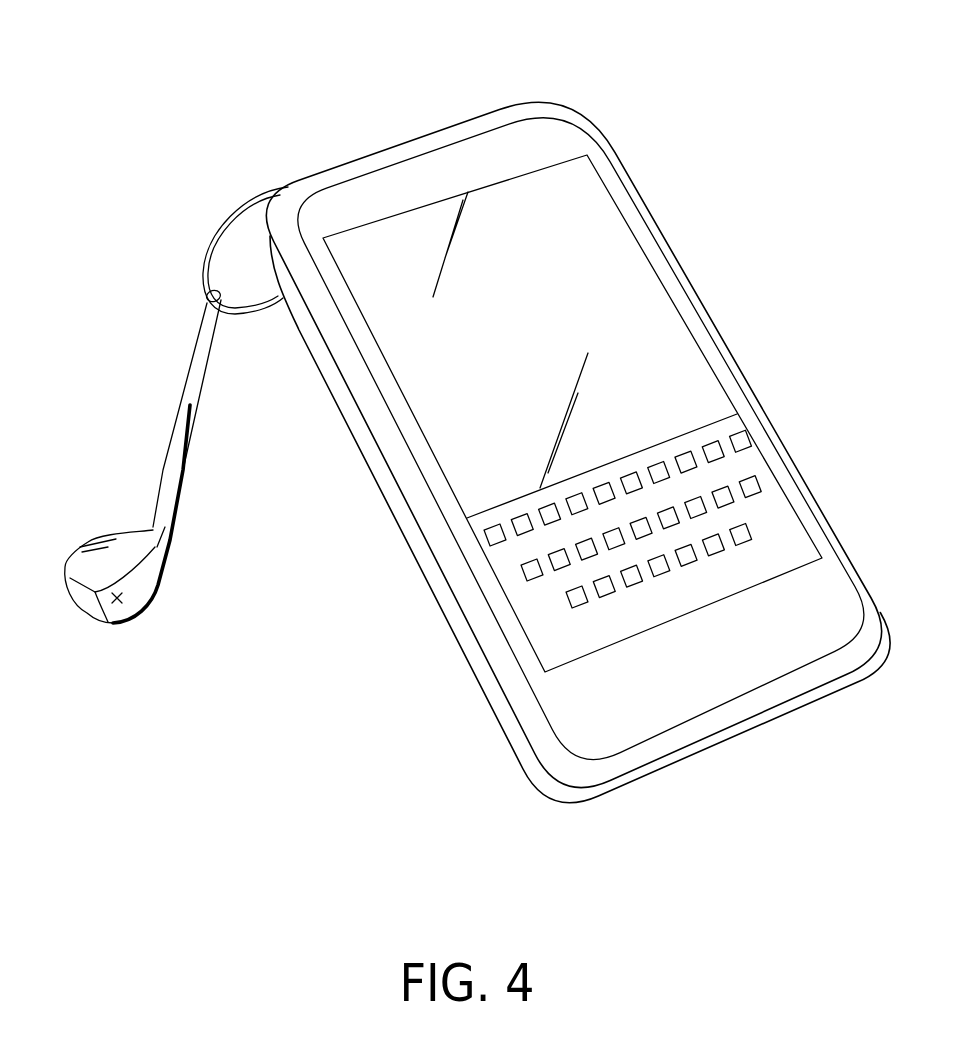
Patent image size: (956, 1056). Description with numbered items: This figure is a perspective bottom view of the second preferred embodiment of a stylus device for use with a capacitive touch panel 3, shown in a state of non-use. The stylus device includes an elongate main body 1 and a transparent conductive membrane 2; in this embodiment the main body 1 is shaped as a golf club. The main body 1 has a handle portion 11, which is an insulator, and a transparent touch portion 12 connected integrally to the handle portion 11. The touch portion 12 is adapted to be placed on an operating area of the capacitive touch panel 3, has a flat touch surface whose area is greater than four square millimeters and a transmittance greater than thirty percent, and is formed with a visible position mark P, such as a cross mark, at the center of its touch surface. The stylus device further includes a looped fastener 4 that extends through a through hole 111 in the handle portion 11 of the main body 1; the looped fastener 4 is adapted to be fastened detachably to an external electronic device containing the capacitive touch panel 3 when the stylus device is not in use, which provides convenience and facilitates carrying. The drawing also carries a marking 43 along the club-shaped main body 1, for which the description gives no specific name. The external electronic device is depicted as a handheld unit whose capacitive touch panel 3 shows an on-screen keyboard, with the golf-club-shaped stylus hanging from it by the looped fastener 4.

The main body 1 is at (76, 638).
The handle portion 11 is at (183, 407).
The through hole 111 is at (207, 300).
The transparent touch portion 12 is at (83, 557).
The transparent conductive membrane 2 is at (196, 540).
The connecting strip 43 is at (184, 482).
The looped fastener 4 is at (233, 217).
The capacitive touch panel 3 is at (527, 200).
The position mark P is at (122, 597).